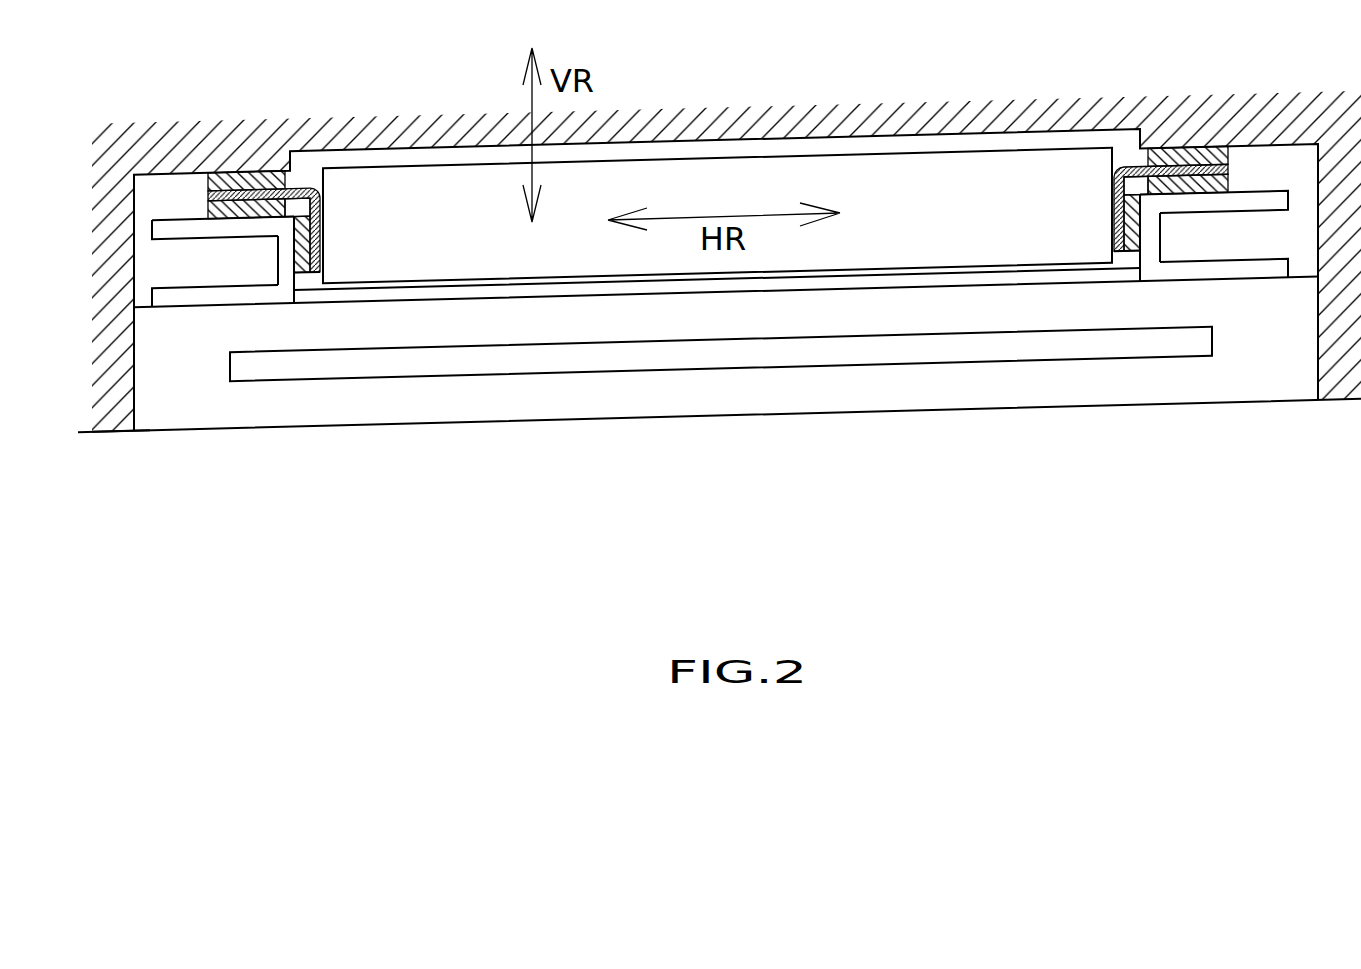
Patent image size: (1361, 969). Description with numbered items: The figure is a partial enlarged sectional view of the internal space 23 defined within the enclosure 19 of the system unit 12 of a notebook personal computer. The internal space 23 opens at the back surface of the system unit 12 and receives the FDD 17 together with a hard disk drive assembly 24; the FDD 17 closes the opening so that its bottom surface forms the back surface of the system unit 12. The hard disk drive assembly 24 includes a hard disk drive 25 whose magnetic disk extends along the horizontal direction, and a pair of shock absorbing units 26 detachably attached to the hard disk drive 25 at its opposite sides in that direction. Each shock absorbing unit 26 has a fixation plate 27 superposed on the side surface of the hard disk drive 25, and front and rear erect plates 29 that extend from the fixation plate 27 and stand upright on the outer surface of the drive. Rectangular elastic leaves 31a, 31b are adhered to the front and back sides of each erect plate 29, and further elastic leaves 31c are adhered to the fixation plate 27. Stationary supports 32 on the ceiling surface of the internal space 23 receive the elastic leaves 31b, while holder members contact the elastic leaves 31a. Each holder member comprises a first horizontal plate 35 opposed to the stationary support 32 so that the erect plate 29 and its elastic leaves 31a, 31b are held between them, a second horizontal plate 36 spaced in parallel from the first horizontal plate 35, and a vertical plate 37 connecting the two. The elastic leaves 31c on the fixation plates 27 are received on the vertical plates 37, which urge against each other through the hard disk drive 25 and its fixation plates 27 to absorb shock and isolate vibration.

The system unit 12 is at (700, 497).
The FDD 17 is at (395, 425).
The enclosure 19 is at (120, 433).
The internal space 23 is at (1317, 375).
The hard disk drive assembly 24 is at (974, 146).
The hard disk drive 25 is at (788, 157).
The shock absorbing unit 26 is at (350, 217).
The fixation plate 27 is at (321, 240).
The erect plate 29 is at (208, 196).
The elastic leaf 31a is at (262, 220).
The elastic leaf 31b is at (286, 181).
The elastic leaf 31c is at (300, 277).
The stationary support 32 is at (240, 170).
The first horizontal plate 35 is at (156, 249).
The second horizontal plate 36 is at (169, 302).
The vertical plate 37 is at (277, 265).